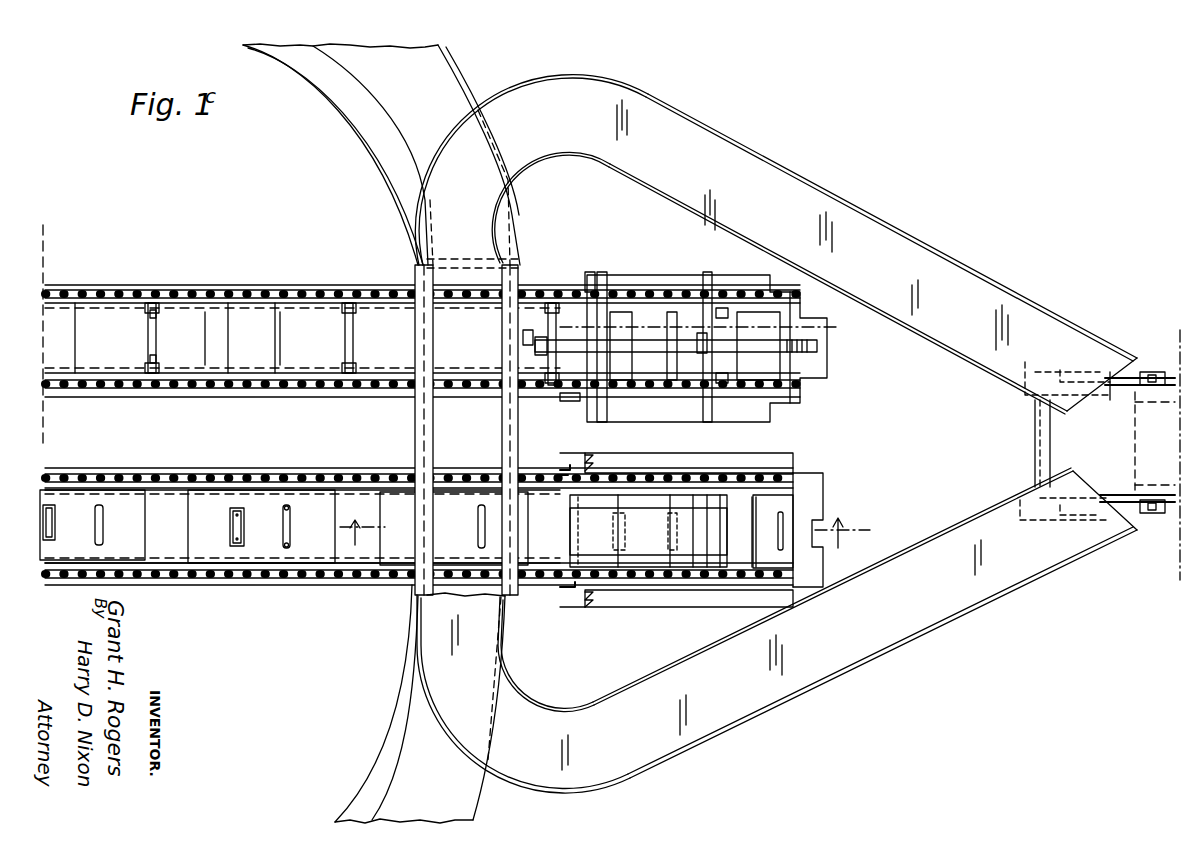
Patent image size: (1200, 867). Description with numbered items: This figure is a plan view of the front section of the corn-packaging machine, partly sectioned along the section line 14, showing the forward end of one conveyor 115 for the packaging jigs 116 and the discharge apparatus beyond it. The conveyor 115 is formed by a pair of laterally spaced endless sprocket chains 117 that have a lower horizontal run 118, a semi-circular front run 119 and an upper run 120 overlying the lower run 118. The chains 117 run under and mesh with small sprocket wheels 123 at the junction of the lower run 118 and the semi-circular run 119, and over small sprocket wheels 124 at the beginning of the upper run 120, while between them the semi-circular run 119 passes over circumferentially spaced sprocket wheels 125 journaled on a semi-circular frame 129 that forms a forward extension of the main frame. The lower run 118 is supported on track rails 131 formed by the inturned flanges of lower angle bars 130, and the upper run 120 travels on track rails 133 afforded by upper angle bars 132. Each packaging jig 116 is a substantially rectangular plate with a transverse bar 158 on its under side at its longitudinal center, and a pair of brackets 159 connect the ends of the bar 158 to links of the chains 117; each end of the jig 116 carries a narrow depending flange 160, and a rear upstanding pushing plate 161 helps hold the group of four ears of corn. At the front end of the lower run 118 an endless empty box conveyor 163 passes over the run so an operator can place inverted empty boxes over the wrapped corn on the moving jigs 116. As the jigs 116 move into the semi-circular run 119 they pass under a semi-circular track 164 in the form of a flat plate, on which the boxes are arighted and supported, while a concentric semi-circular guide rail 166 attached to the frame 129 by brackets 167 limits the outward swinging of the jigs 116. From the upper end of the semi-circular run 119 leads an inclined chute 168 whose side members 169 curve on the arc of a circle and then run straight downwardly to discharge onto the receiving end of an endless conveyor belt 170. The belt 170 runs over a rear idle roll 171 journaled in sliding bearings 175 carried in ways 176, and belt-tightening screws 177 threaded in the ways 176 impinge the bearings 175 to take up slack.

The section line 14 is at (605, 524).
The conveyor 115 is at (178, 290).
The packaging jig 116 is at (212, 372).
The sprocket chain 117 is at (332, 292).
The lower horizontal run 118 is at (261, 505).
The semi-circular front run 119 is at (706, 441).
The upper run 120 is at (422, 281).
The small sprocket wheel 123 is at (567, 478).
The small sprocket wheel 124 is at (575, 292).
The circumferentially spaced sprocket wheel 125 is at (760, 403).
The semi-circular frame 129 is at (760, 424).
The lower angle bar 130 is at (83, 476).
The track rail 131 is at (295, 474).
The upper angle bar 132 is at (62, 286).
The track rail 133 is at (126, 286).
The transverse bar 158 is at (160, 318).
The bracket 159 is at (160, 360).
The depending flange 160 is at (272, 370).
The pushing plate 161 is at (232, 528).
The empty box conveyor 163 is at (398, 150).
The semi-circular track 164 is at (648, 330).
The semi-circular guide rail 166 is at (535, 345).
The bracket 167 is at (600, 328).
The inclined chute 168 is at (605, 165).
The side member 169 is at (998, 286).
The endless conveyor belt 170 is at (1035, 461).
The rear idle roll 171 is at (1124, 388).
The sliding bearing 175 is at (1072, 366).
The way 176 is at (1140, 370).
The belt-tightening screw 177 is at (1158, 498).